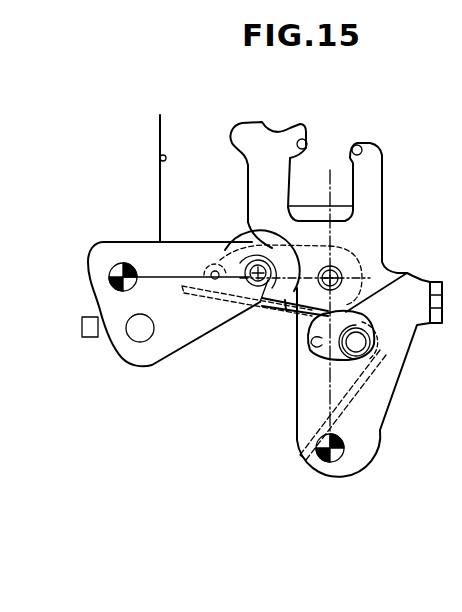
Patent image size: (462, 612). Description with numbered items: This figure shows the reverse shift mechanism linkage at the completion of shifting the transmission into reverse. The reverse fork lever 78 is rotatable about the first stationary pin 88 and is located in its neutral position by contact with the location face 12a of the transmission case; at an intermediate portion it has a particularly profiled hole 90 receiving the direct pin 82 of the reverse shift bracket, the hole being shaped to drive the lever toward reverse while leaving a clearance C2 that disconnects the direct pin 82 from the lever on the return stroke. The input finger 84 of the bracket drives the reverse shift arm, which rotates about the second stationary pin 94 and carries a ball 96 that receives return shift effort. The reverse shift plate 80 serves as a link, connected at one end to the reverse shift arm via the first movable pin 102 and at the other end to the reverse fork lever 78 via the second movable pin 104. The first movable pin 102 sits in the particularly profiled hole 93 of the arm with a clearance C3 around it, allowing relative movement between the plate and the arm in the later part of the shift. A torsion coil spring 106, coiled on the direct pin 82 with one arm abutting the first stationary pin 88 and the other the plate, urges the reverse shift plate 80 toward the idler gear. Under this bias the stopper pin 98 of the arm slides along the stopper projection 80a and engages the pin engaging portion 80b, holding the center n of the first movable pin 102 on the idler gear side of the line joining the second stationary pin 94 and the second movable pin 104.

The location face 12a is at (160, 158).
The second stationary pin 94 is at (123, 262).
The ball 96 is at (142, 342).
The input finger 84 is at (88, 338).
The center of the first movable pin n is at (236, 254).
The stopper pin 98 is at (203, 263).
The stopper projection 80a is at (206, 290).
The pin engaging portion 80b is at (213, 278).
The clearance C3 is at (265, 250).
The profiled hole 93 is at (278, 250).
The reverse fork lever 78 is at (386, 188).
The second movable pin 104 is at (340, 274).
The clearance C2 is at (433, 292).
The direct pin 82 is at (367, 347).
The first stationary pin 88 is at (345, 450).
The reverse shift plate 80 is at (288, 306).
The first movable pin 102 is at (260, 304).
The profiled hole 90 is at (316, 342).
The torsion coil spring 106 is at (358, 392).